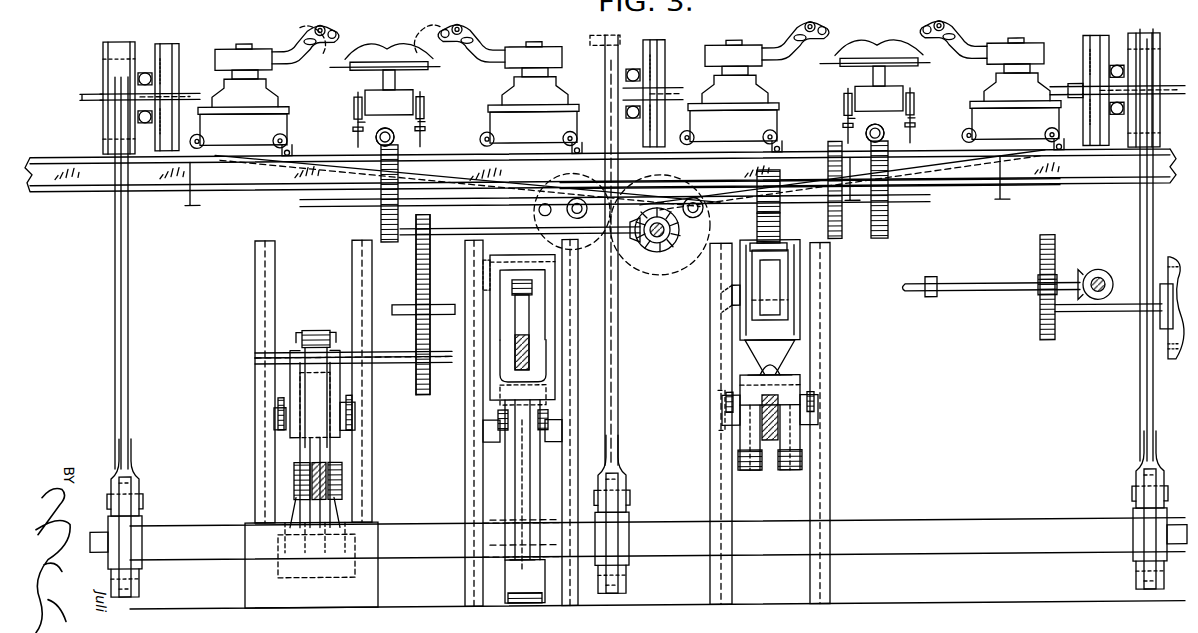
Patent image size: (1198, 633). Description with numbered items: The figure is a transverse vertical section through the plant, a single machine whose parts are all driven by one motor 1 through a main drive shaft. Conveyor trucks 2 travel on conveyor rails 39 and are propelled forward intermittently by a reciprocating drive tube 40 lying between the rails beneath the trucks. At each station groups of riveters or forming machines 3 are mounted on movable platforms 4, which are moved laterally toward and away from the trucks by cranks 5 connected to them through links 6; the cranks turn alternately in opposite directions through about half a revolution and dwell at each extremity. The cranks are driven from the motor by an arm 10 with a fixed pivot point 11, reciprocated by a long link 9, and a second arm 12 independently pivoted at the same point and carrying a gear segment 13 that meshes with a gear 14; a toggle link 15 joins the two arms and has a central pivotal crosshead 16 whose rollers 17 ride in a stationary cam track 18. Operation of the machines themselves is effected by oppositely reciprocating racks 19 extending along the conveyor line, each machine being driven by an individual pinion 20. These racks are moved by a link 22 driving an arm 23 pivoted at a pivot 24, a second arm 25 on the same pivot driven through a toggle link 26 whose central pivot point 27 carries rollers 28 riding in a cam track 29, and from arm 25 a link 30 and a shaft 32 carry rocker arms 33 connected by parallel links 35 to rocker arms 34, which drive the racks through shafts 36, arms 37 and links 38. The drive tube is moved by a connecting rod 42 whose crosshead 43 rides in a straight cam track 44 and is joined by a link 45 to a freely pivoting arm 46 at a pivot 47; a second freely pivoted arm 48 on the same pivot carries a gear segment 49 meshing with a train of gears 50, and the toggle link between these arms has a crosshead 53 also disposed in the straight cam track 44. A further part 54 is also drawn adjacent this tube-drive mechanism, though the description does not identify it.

The motor 1 is at (975, 293).
The conveyor trucks 2 is at (365, 100).
The riveters or forming machines 3 is at (245, 52).
The movable platforms 4 is at (627, 97).
The cranks 5 is at (545, 215).
The links 6 is at (326, 178).
The long link 9 is at (326, 482).
The arm 10 is at (300, 486).
The fixed pivot point 11 is at (252, 550).
The second arm 12 is at (305, 443).
The gear segment 13 is at (316, 333).
The gear 14 is at (298, 340).
The toggle link 15 is at (290, 373).
The central pivotal crosshead 16 is at (356, 415).
The rollers 17 is at (274, 418).
The stationary cam track 18 is at (272, 306).
The racks 19 is at (145, 74).
The pinions 20 is at (160, 95).
The link 22 is at (515, 346).
The arm 23 is at (500, 374).
The pivot 24 is at (470, 541).
The second arm 25 is at (520, 472).
The toggle link 26 is at (505, 306).
The central pivot point 27 is at (488, 276).
The rollers 28 is at (489, 262).
The cam track 29 is at (483, 435).
The link 30 is at (528, 607).
The shaft 32 is at (875, 527).
The rocker arms 33 is at (130, 517).
The rocker arms 34 is at (103, 47).
The parallel links 35 is at (128, 288).
The shafts 36 is at (100, 92).
The arms 37 is at (180, 60).
The links 38 is at (165, 45).
The conveyor rails 39 is at (420, 125).
The reciprocating drive tube 40 is at (395, 140).
The connecting rod 42 is at (785, 394).
The crosshead 43 is at (730, 408).
The straight cam track 44 is at (812, 283).
The link 45 is at (805, 441).
The freely pivoting arm 46 is at (758, 476).
The pivot 47 is at (714, 430).
The second freely pivoted arm 48 is at (760, 286).
The gear segment 49 is at (780, 234).
The train of gears 50 is at (381, 210).
The crosshead 53 is at (732, 301).
The wedge 54 is at (800, 346).